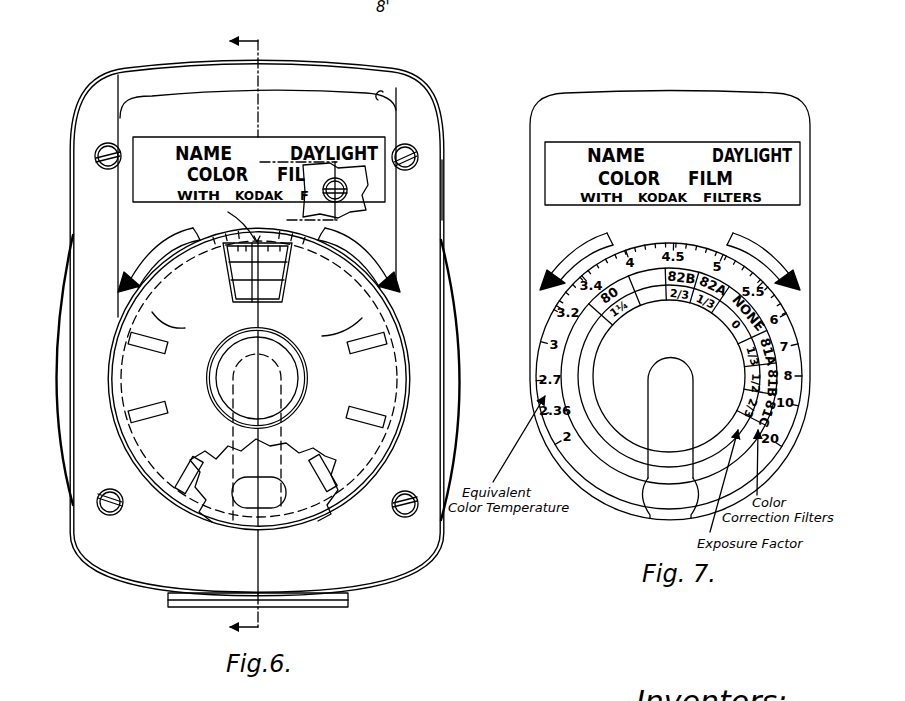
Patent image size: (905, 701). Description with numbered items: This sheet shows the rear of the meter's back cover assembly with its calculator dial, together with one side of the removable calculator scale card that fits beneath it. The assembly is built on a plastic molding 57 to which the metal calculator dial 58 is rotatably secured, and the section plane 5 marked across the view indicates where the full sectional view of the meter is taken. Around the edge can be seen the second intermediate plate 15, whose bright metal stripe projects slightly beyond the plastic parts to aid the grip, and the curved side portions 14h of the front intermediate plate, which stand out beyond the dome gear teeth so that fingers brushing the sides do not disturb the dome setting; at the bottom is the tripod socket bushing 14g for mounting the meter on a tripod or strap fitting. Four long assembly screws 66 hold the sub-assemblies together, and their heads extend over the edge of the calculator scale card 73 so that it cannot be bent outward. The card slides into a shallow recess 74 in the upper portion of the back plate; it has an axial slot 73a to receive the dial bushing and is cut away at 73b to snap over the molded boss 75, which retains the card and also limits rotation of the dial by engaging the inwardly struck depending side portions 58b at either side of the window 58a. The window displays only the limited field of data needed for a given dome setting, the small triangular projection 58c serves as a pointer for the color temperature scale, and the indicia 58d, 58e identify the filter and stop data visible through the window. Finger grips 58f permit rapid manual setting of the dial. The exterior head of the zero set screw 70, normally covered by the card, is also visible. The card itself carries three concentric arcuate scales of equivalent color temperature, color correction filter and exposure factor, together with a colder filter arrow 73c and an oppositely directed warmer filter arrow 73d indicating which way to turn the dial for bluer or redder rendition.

In FIG. 6, the section plane 5— 5 is at (251, 334).
In FIG. 6, the tripod socket bushing 14g is at (230, 600).
In FIG. 6, the curved side portions 14h is at (62, 395).
In FIG. 6, the second intermediate plate 15 is at (80, 554).
In FIG. 6, the plastic molding back plate 57 is at (433, 190).
In FIG. 6, the calculator dial 58 is at (128, 452).
In FIG. 6, the window 58a is at (229, 224).
In FIG. 6, the depending side portions 58b is at (205, 272).
In FIG. 6, the triangular projection 58c is at (255, 238).
In FIG. 6, the indicia 58d is at (178, 300).
In FIG. 6, the indicia 58e is at (335, 262).
In FIG. 6, the finger grips 58f is at (150, 408).
In FIG. 6, the assembly screws 66 is at (102, 170).
In FIG. 6, the zero set screw 70 is at (347, 200).
In FIG. 6, the calculator scale card 73 is at (150, 100).
In FIG. 7, the calculator scale card 73 is at (668, 92).
In FIG. 6, the axial slot 73a is at (236, 452).
In FIG. 7, the axial slot 73a is at (644, 404).
In FIG. 6, the cut away portion 73b is at (293, 500).
In FIG. 7, the cut away portion 73b is at (670, 506).
In FIG. 6, the colder filter arrow 73c is at (118, 263).
In FIG. 7, the colder filter arrow 73c is at (572, 265).
In FIG. 6, the warmer filter arrow 73d is at (398, 266).
In FIG. 7, the warmer filter arrow 73d is at (770, 272).
In FIG. 6, the shallow recess 74 is at (383, 92).
In FIG. 6, the molded boss 75 is at (245, 495).